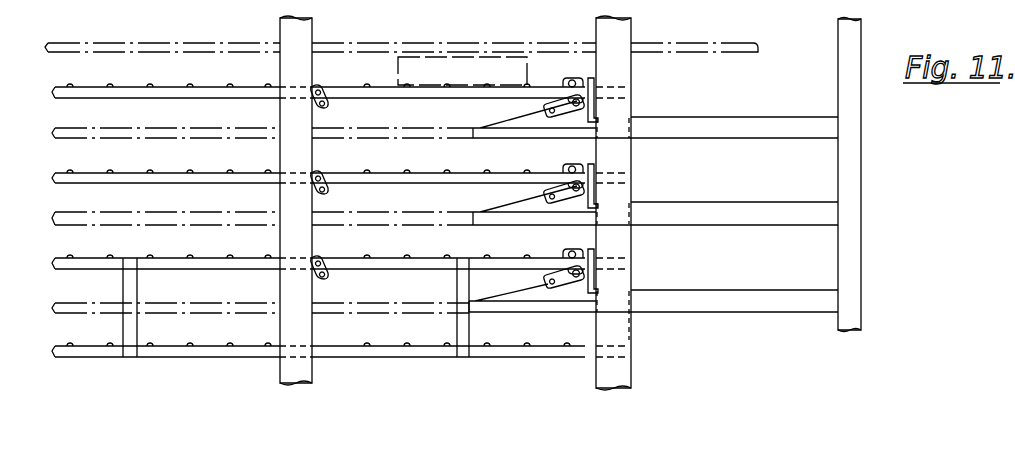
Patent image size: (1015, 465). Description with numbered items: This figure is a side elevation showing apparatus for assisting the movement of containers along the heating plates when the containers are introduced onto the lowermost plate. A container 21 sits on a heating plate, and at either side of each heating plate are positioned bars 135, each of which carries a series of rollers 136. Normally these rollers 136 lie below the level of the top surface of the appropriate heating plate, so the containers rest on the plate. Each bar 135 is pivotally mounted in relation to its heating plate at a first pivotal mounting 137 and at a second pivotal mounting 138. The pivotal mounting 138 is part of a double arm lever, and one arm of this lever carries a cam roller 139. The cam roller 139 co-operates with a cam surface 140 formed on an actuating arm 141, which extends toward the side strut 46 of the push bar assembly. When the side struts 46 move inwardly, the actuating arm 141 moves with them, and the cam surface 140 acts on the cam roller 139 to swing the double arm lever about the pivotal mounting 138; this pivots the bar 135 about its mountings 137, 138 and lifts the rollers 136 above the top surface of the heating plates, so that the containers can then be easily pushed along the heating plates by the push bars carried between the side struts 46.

The container body 21 is at (470, 56).
The side strut 46 is at (855, 237).
The bar 135 is at (420, 92).
The roller 136 is at (320, 89).
The pivotal mounting 137 is at (325, 102).
The pivotal mounting 138 is at (596, 94).
The cam roller 139 is at (547, 101).
The cam surface 140 is at (493, 128).
The actuating arm 141 is at (742, 127).